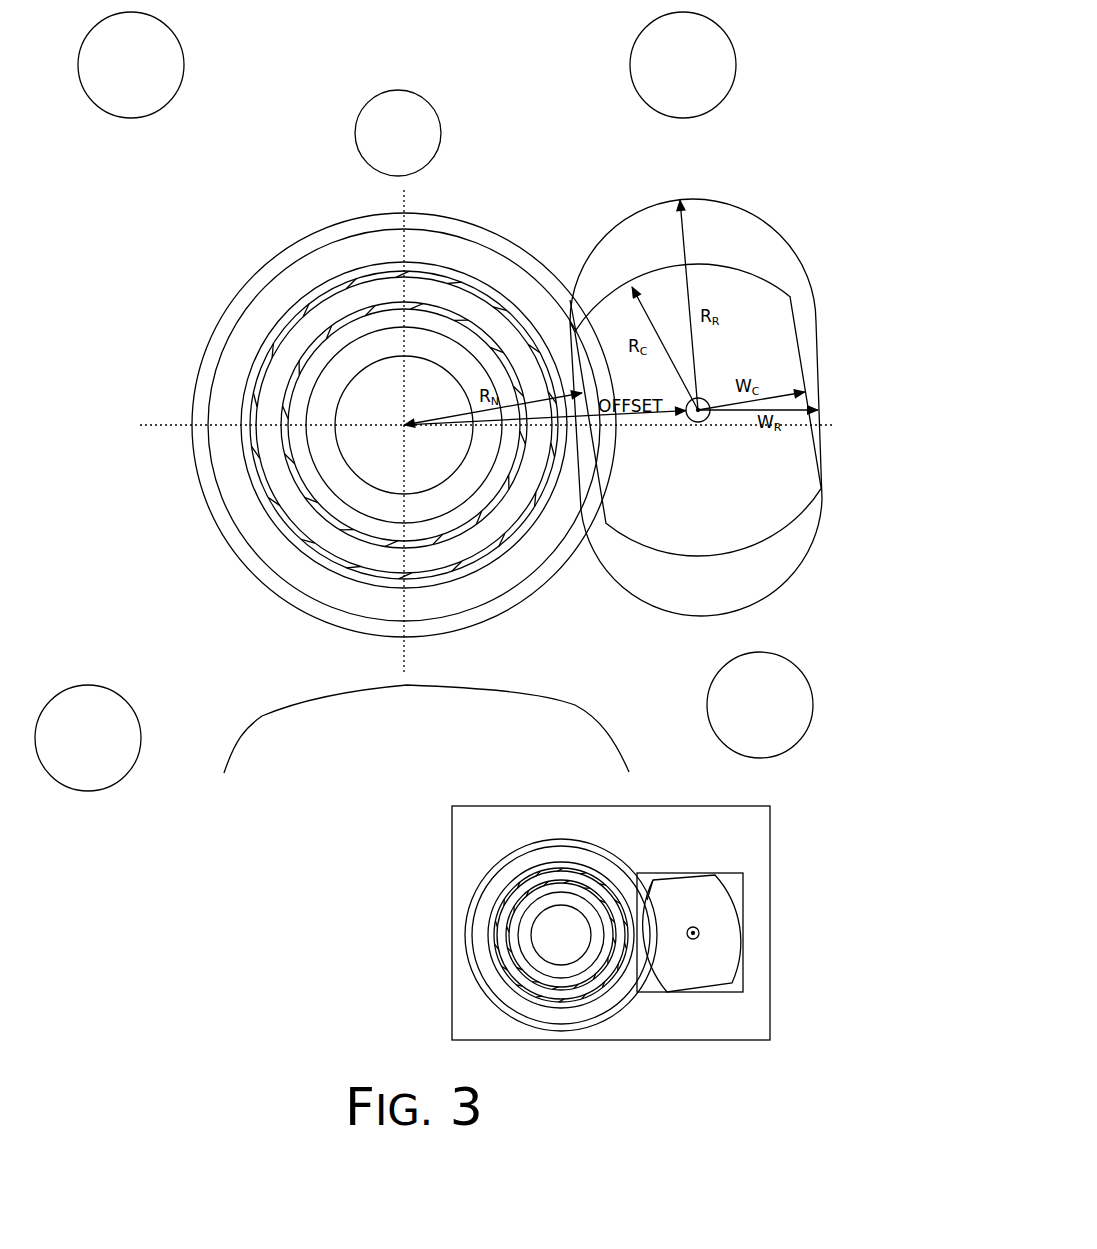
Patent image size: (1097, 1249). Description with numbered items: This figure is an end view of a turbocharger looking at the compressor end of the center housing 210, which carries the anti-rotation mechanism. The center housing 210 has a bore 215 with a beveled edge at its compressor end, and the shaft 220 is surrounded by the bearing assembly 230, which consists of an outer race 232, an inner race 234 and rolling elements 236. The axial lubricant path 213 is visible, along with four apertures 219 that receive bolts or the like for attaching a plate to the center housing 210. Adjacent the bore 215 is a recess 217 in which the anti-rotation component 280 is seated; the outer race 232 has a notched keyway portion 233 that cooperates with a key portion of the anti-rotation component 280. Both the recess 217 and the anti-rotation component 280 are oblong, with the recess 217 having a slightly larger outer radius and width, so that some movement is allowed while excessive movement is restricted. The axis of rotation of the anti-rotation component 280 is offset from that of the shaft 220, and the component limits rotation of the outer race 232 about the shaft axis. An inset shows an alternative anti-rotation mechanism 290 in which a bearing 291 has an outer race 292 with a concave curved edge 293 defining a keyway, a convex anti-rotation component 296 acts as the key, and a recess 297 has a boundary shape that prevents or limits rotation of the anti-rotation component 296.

The center housing 210 is at (487, 350).
The axial lubricant path 213 is at (398, 133).
The bore 215 is at (441, 232).
The recess 217 is at (696, 407).
The apertures 219 is at (170, 103).
The shaft 220 is at (404, 425).
The bearing assembly 230 is at (345, 234).
The outer race 232 is at (325, 268).
The keyway portion 233 is at (575, 332).
The inner race 234 is at (287, 356).
The rolling elements 236 is at (258, 450).
The anti-rotation component 280 is at (698, 410).
The anti-rotation mechanism 290 is at (498, 806).
The bearing 291 is at (561, 935).
The outer race 292 is at (593, 853).
The curved edge 293 is at (647, 900).
The anti-rotation component 296 is at (692, 933).
The recess 297 is at (673, 873).